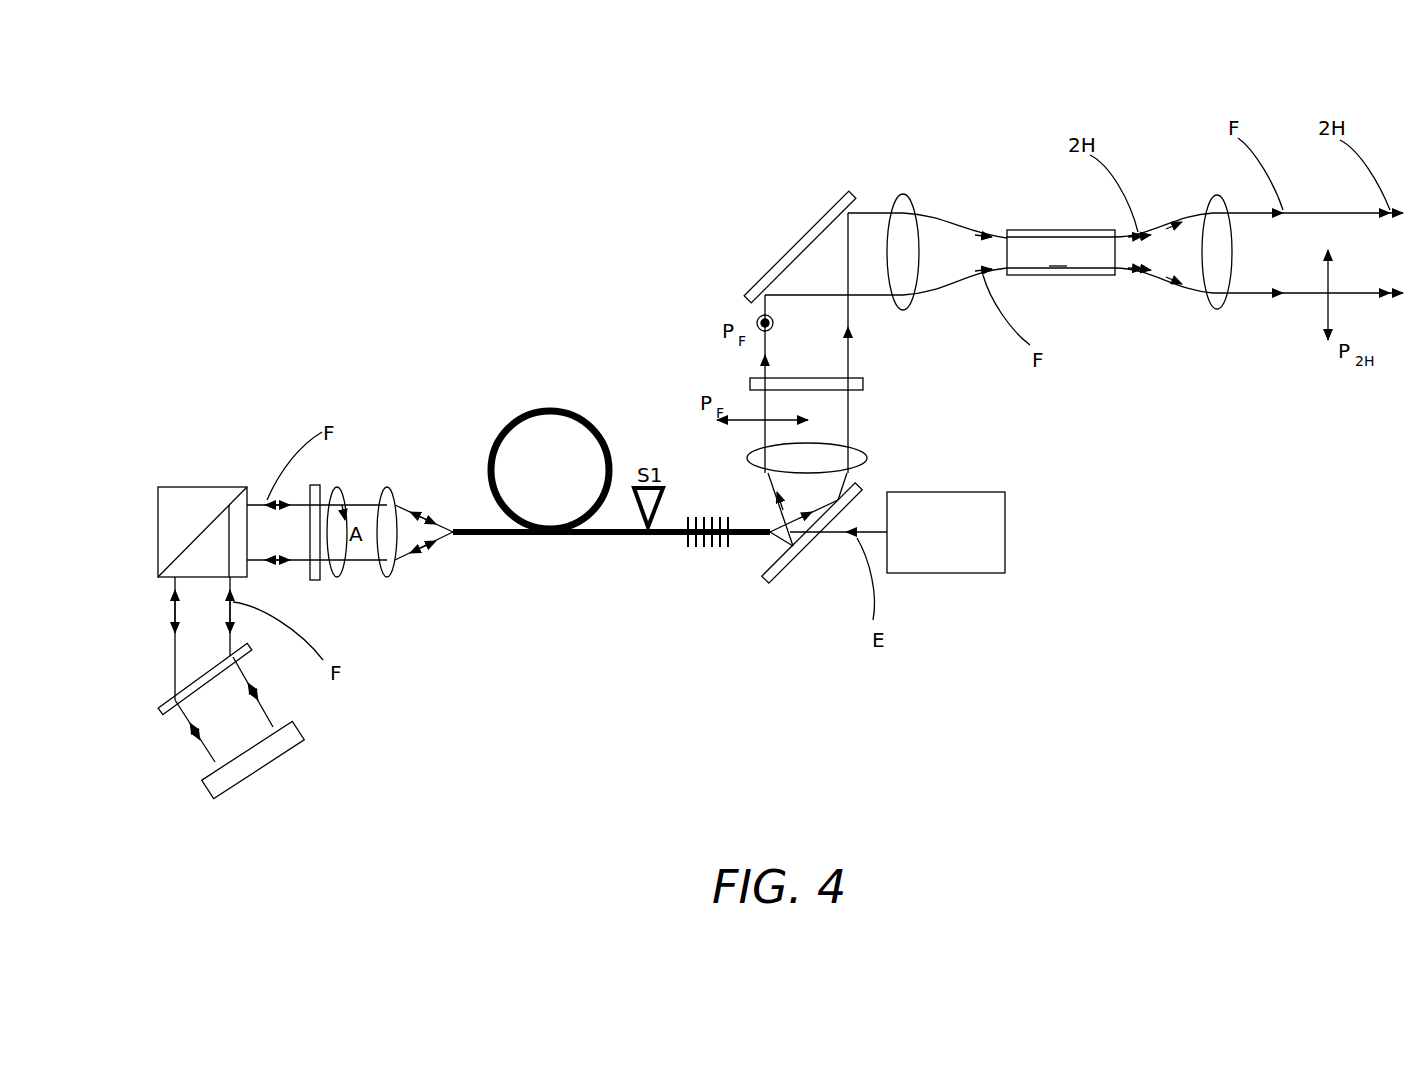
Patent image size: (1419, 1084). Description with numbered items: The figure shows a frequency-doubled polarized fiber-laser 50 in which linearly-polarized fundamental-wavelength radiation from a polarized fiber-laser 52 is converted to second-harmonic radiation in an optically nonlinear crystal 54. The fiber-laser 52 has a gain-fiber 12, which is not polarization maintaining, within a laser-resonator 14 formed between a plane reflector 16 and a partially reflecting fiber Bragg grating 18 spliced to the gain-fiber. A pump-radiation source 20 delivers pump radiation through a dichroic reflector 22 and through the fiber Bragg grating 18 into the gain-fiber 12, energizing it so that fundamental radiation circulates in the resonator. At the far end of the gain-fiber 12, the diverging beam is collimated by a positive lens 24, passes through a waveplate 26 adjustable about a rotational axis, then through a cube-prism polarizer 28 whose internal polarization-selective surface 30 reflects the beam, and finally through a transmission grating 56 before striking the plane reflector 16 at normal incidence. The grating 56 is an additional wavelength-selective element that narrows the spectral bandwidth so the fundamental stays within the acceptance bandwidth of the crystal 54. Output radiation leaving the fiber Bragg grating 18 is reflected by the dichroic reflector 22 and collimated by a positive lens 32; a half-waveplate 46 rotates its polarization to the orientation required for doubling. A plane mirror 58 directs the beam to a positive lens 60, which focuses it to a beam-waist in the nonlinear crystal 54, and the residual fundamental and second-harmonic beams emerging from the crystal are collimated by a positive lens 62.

The gain-fiber 12 is at (492, 550).
The laser-resonator 14 is at (345, 533).
The plane reflector 16 is at (252, 750).
The fiber Bragg grating 18 is at (710, 550).
The pump-radiation source 20 is at (934, 580).
The dichroic reflector 22 is at (783, 560).
The positive lens 24 is at (390, 498).
The waveplate 26 is at (314, 582).
The polarizer 28 is at (210, 483).
The internal polarization-selective surface 30 is at (193, 540).
The positive lens 32 is at (867, 458).
The half-waveplate 46 is at (865, 385).
The frequency-doubled polarized fiber-laser 50 is at (1137, 654).
The polarized fiber-laser 52 is at (422, 357).
The optically nonlinear crystal 54 is at (1060, 277).
The transmission grating 56 is at (167, 707).
The plane mirror 58 is at (807, 247).
The positive lens 60 is at (903, 192).
The positive lens 62 is at (1213, 300).